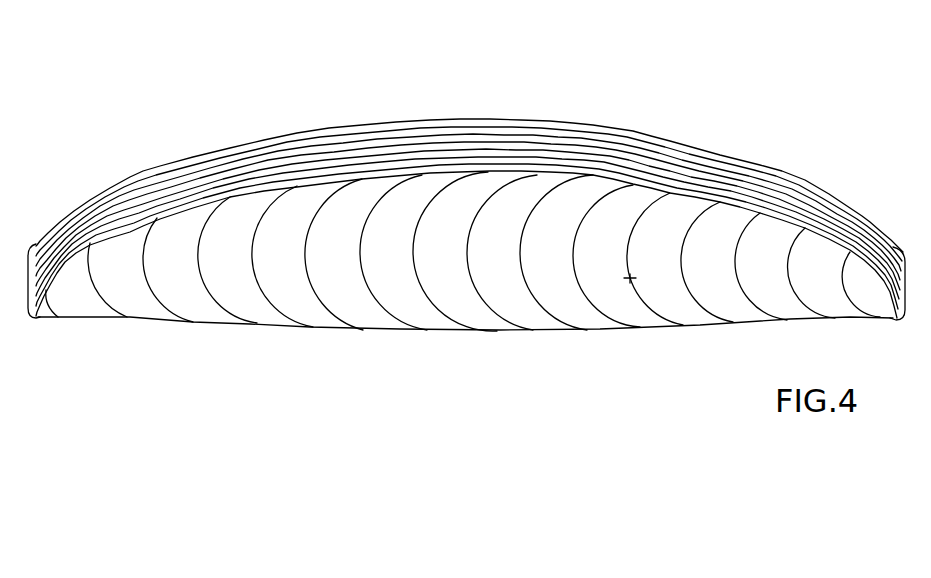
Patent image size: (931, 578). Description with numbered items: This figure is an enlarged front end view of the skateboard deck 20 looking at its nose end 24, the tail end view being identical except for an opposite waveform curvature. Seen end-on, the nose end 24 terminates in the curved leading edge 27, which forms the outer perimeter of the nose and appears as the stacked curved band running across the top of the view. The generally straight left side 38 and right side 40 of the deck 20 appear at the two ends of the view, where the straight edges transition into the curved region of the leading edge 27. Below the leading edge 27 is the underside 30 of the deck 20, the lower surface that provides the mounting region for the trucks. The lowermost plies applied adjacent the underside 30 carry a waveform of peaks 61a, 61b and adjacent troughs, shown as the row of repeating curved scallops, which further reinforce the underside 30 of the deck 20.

The skateboard deck 20 is at (462, 400).
The nose end 24 is at (337, 240).
The curved leading edge 27 is at (455, 132).
The underside 30 is at (532, 313).
The left side 38 is at (903, 287).
The right side 40 is at (28, 268).
The peak 61a is at (210, 302).
The peak 61b is at (280, 318).